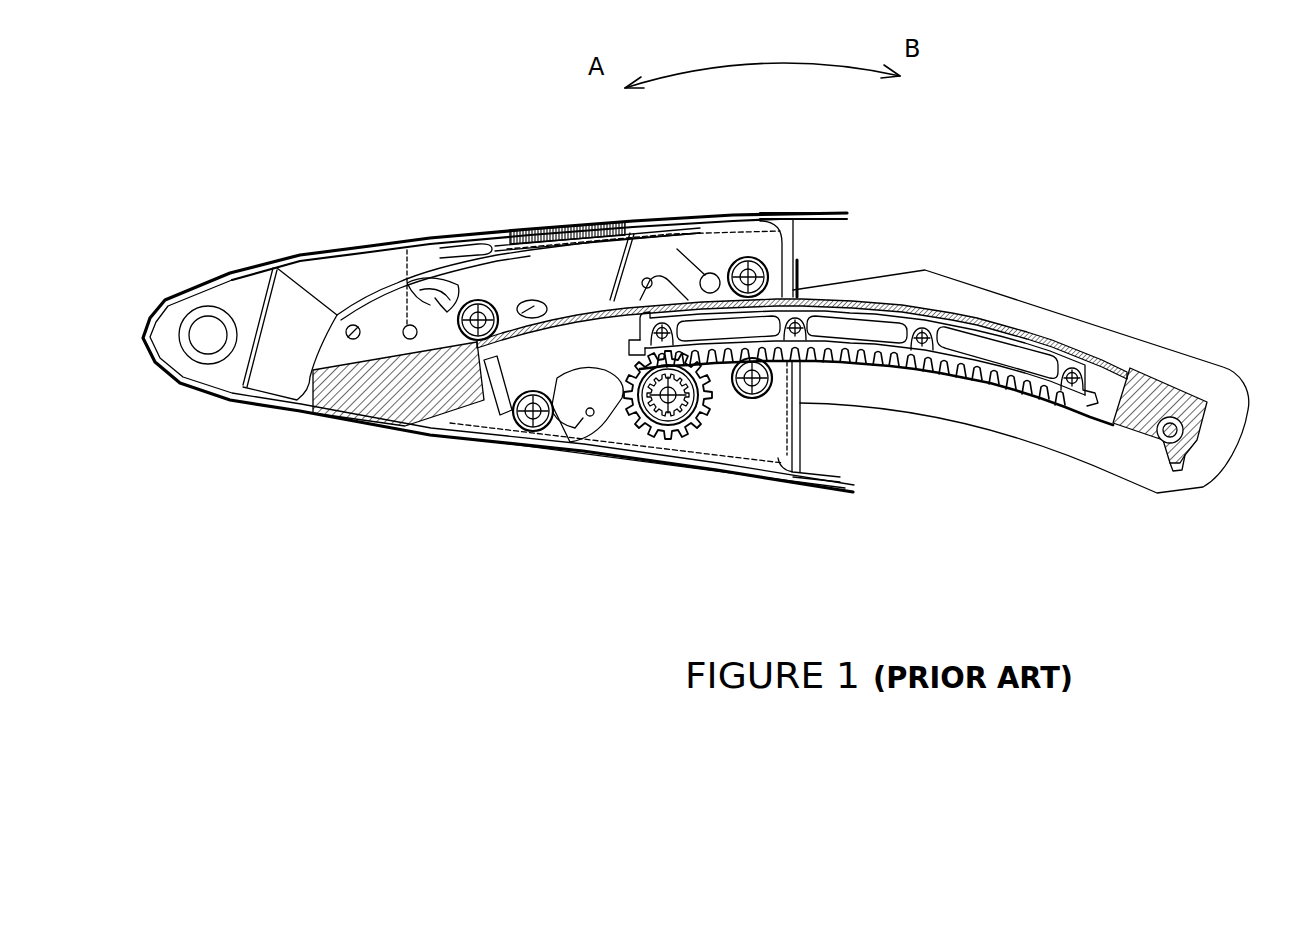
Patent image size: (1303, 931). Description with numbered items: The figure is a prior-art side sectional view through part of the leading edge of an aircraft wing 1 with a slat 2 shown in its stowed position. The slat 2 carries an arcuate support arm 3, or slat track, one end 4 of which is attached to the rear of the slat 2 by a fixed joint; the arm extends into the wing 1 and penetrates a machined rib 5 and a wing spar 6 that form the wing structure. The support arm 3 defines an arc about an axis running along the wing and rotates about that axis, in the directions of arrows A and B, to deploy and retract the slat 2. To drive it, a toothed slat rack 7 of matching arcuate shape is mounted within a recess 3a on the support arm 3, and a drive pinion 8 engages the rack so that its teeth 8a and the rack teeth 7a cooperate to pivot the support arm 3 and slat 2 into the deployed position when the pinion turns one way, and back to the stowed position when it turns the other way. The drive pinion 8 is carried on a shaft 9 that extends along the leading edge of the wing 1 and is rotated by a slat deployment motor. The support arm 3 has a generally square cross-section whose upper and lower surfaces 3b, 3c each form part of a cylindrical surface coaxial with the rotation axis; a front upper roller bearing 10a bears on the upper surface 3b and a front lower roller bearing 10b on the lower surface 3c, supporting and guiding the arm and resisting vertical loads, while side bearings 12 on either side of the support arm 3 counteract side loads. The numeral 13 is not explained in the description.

The wing 1 is at (789, 212).
The slat 2 is at (267, 257).
The support arm 3 is at (932, 303).
The recess 3a is at (1112, 410).
The upper surface 3b is at (1077, 337).
The lower surface 3c is at (1125, 462).
The end 4 is at (382, 400).
The machined rib 5 is at (592, 232).
The wing spar 6 is at (783, 245).
The slat rack 7 is at (978, 383).
The teeth 7a is at (892, 366).
The drive pinion 8 is at (650, 428).
The teeth 8a is at (683, 420).
The shaft 9 is at (623, 402).
The front upper roller bearing 10a is at (478, 300).
The front lower roller bearing 10b is at (520, 430).
The side bearings 12 is at (640, 262).
The guide rails 13 is at (528, 240).